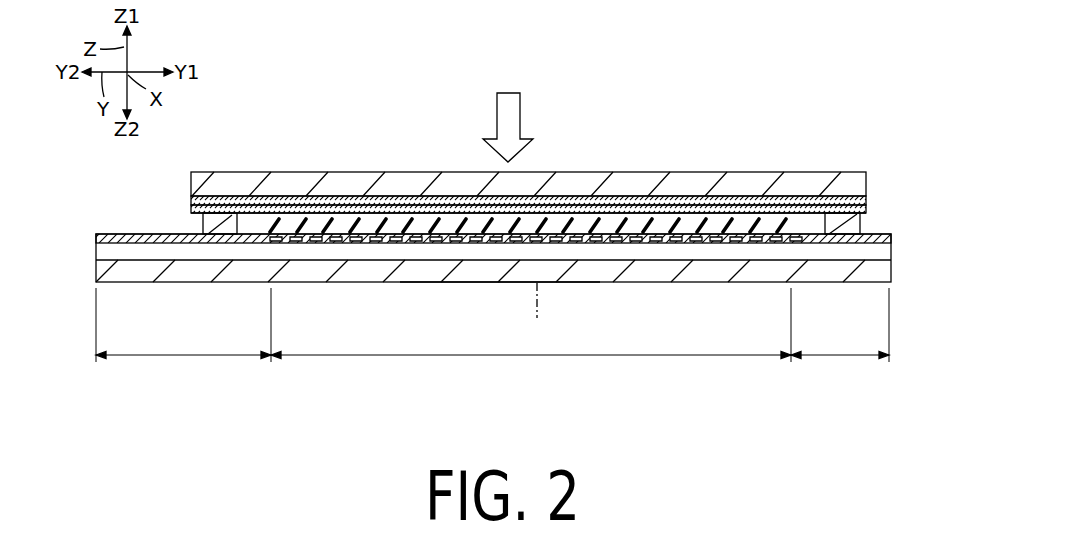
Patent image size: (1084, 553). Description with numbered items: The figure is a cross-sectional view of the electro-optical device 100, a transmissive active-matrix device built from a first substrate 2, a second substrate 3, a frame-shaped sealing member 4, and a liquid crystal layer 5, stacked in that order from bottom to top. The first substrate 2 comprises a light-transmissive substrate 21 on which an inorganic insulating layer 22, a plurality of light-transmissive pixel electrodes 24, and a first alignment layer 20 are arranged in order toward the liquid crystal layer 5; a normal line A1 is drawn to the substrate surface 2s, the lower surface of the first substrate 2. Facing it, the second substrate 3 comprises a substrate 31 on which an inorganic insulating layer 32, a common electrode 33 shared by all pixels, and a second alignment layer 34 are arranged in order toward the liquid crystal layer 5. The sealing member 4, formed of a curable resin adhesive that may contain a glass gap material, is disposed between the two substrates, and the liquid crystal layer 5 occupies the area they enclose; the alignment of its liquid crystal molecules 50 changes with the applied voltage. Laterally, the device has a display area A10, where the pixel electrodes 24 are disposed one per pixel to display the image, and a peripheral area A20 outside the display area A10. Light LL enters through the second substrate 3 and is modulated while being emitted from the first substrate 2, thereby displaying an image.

The electro-optical device 100 is at (871, 124).
The first substrate 2 is at (890, 285).
The first alignment layer 20 is at (807, 247).
The substrate 21 is at (319, 270).
The inorganic insulating layer 22 is at (373, 250).
The pixel electrodes 24 is at (733, 247).
The substrate surface 2s is at (497, 284).
The second substrate 3 is at (822, 172).
The substrate 31 is at (265, 172).
The inorganic insulating layer 32 is at (332, 197).
The common electrode 33 is at (384, 207).
The second alignment layer 34 is at (431, 213).
The sealing member 4 is at (841, 223).
The liquid crystal layer 5 is at (805, 228).
The liquid crystal molecules 50 is at (702, 228).
The normal line A1 is at (536, 313).
The display area A10 is at (531, 335).
The peripheral area A20 is at (223, 355).
The light LL is at (508, 111).